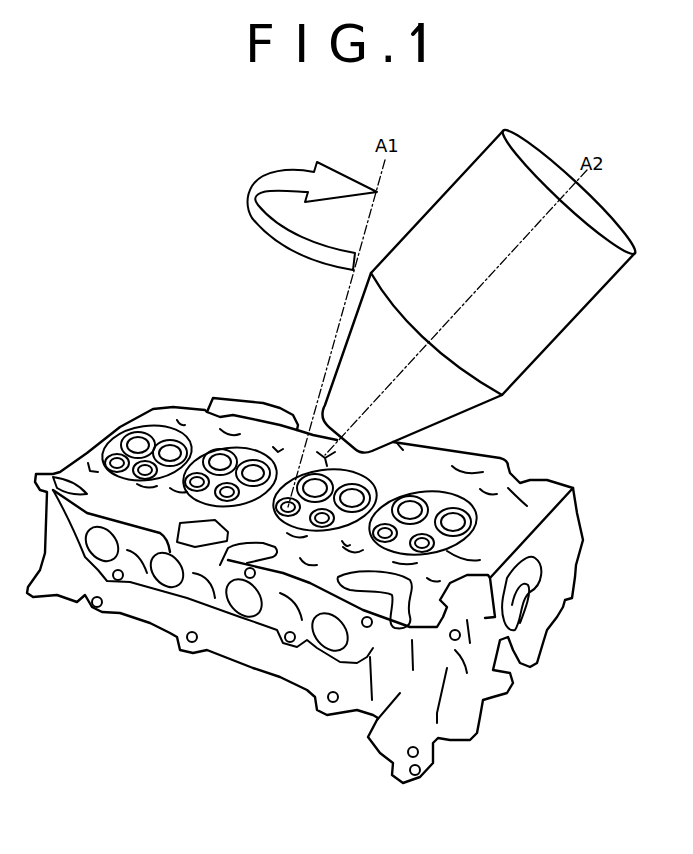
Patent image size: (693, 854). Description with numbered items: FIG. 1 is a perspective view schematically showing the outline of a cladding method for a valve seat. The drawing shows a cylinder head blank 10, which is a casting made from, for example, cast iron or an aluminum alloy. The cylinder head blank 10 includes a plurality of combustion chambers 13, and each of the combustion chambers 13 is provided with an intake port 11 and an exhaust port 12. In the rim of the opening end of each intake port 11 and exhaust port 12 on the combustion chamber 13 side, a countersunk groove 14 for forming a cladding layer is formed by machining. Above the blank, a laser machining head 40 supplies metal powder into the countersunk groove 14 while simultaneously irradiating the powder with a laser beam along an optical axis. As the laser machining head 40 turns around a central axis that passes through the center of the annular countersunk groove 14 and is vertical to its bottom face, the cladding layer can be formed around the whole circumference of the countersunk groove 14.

The cylinder head blank 10 is at (342, 559).
The intake port 11 is at (113, 455).
The exhaust port 12 is at (138, 437).
The combustion chamber 13 is at (163, 437).
The countersunk groove 14 is at (132, 432).
The laser machining head 40 is at (568, 317).